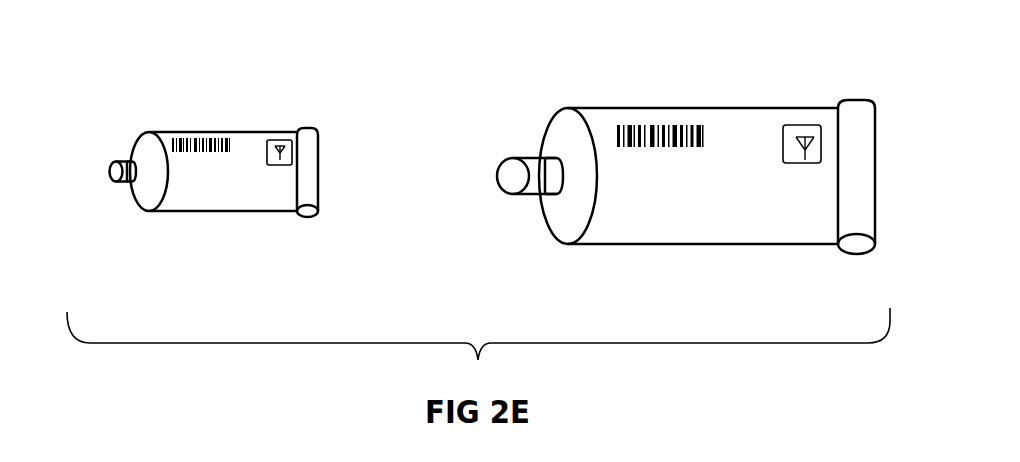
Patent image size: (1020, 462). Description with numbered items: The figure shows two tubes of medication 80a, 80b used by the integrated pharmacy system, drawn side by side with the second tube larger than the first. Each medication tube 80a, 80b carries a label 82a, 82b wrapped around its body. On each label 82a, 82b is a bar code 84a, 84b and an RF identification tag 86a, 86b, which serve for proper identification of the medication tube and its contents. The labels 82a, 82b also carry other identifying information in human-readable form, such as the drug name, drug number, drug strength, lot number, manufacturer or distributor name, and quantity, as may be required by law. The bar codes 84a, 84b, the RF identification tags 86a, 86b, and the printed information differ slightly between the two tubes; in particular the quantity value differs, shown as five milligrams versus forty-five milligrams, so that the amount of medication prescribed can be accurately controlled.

The medication tube 80a is at (70, 66).
The medication tube 80b is at (892, 48).
The label 82a is at (247, 202).
The label 82b is at (737, 232).
The bar code 84a is at (167, 130).
The bar code 84b is at (633, 120).
The RF identification tag 86a is at (278, 137).
The RF identification tag 86b is at (790, 125).